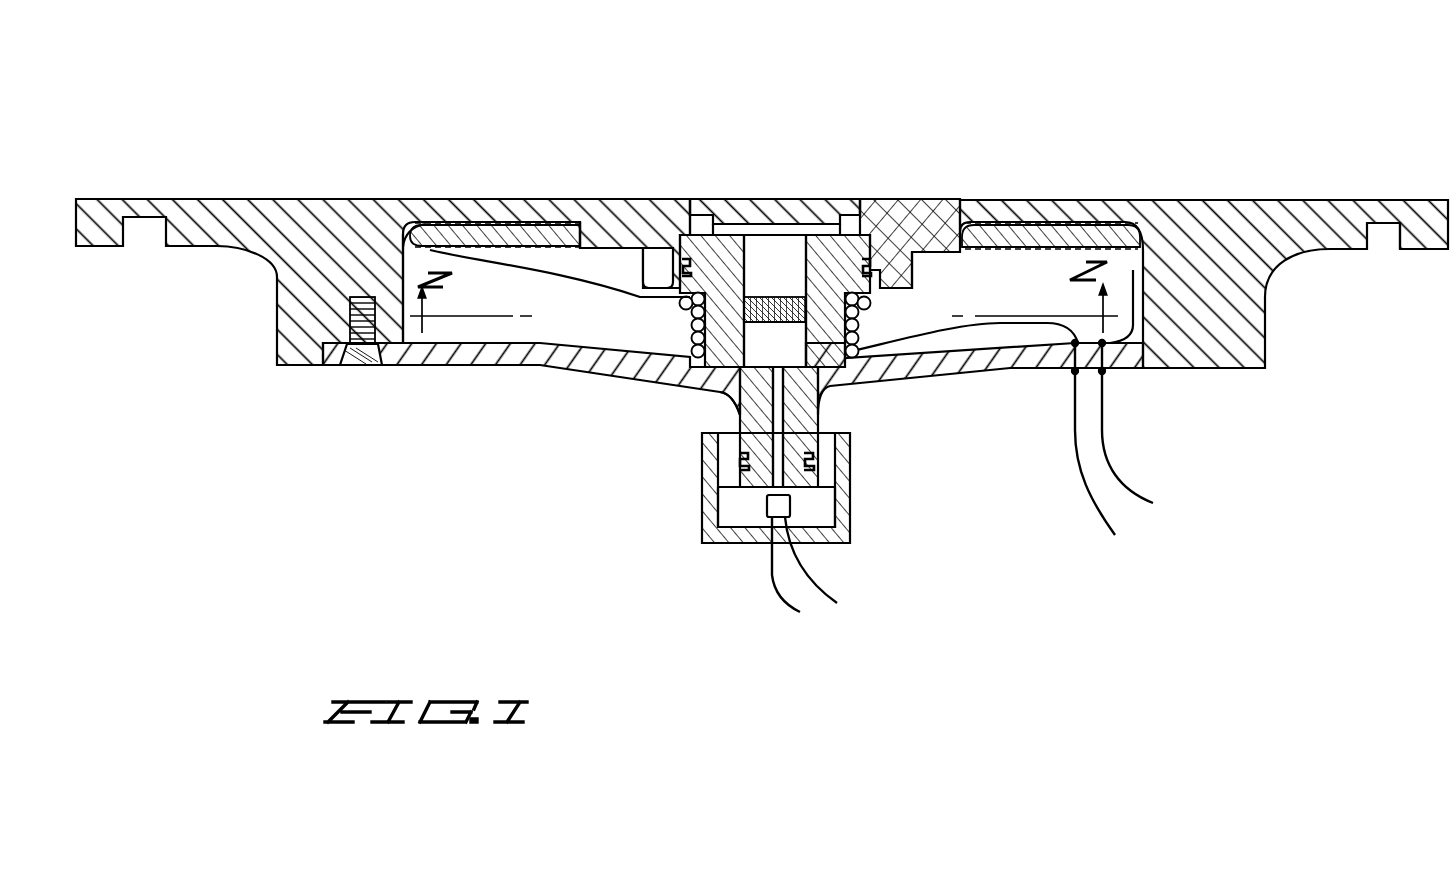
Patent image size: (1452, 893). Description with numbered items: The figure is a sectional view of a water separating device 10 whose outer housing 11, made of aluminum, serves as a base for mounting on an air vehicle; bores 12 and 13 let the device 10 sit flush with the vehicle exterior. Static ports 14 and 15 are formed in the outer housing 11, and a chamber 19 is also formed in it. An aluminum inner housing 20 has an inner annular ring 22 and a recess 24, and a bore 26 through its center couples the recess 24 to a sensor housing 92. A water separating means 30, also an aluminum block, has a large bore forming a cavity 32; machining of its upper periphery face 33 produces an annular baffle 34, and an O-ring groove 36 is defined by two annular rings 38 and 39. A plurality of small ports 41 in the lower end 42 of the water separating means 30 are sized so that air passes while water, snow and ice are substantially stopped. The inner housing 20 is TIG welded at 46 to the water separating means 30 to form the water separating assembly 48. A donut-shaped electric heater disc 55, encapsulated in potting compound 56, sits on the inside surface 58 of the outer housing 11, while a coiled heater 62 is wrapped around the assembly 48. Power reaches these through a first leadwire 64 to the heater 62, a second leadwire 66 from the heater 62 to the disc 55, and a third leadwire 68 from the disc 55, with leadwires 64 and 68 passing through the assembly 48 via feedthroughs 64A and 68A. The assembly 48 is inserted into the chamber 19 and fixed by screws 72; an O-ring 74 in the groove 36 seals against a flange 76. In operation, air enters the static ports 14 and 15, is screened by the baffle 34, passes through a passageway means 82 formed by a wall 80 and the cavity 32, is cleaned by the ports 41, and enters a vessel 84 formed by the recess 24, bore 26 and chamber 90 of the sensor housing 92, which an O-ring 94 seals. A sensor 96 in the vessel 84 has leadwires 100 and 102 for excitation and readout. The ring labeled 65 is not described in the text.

The water separating device 10 is at (1038, 170).
The outer housing 11 is at (1257, 215).
The bore 12 is at (150, 247).
The bore 13 is at (1387, 249).
The static port 14 is at (702, 199).
The static port 15 is at (852, 199).
The chamber 19 is at (473, 304).
The inner housing 20 is at (423, 370).
The inner annular ring 22 is at (792, 340).
The recess 24 is at (817, 377).
The bore 26 is at (735, 412).
The water separating means 30 is at (688, 237).
The cavity 32 is at (870, 237).
The upper periphery face 33 is at (678, 198).
The annular baffle 34 is at (730, 235).
The O-ring groove 36 is at (945, 199).
The annular ring 38 is at (878, 262).
The annular ring 39 is at (870, 282).
The ports 41 is at (762, 290).
The lower end 42 is at (692, 337).
The TIG weld 46 is at (858, 328).
The water separating assembly 48 is at (650, 275).
The electric heater disc 55 is at (458, 225).
The potting compound 56 is at (590, 248).
The inside surface 58 is at (427, 225).
The coiled heater 62 is at (688, 308).
The first leadwire 64 is at (1082, 493).
The feedthrough 64A is at (1072, 378).
The magnet ring 65 is at (1135, 238).
The second leadwire 66 is at (400, 247).
The third leadwire 68 is at (1120, 470).
The feedthrough 68A is at (1105, 375).
The screws 72 is at (355, 370).
The O-ring 74 is at (640, 260).
The flange 76 is at (681, 264).
The wall 80 is at (727, 224).
The passageway means 82 is at (797, 262).
The vessel 84 is at (728, 392).
The chamber 90 is at (733, 520).
The sensor housing 92 is at (700, 528).
The O-ring 94 is at (805, 460).
The sensor 96 is at (790, 517).
The leadwire 100 is at (783, 600).
The leadwire 102 is at (820, 597).